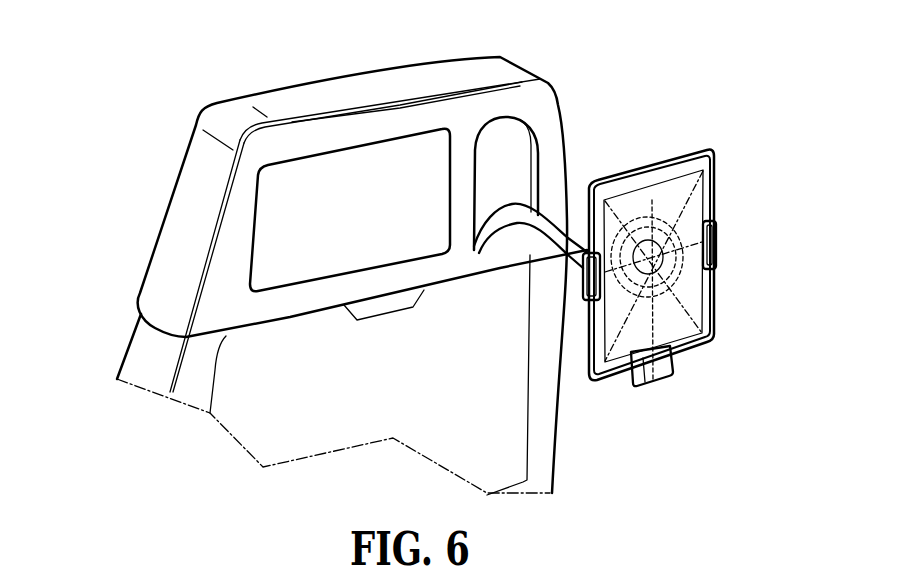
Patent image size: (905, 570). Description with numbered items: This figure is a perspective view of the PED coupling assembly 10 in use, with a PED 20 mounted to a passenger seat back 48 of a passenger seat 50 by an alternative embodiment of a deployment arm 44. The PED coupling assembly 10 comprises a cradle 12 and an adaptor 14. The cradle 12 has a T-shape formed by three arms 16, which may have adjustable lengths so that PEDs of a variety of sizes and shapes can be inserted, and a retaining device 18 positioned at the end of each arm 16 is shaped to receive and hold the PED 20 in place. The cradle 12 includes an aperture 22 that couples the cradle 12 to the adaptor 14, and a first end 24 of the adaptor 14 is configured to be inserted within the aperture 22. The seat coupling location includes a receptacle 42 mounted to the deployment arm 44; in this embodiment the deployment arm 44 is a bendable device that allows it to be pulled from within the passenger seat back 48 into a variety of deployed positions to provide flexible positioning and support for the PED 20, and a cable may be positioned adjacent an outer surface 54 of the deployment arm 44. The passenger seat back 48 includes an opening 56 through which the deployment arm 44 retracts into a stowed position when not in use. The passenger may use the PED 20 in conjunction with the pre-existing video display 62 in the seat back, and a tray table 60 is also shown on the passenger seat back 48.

The PED coupling assembly 10 is at (752, 140).
The cradle 12 is at (667, 378).
The adaptor 14 is at (652, 200).
The arm 16 is at (718, 192).
The retaining device 18 is at (718, 244).
The PED 20 is at (709, 148).
The aperture 22 is at (695, 280).
The first end 24 is at (680, 262).
The receptacle 42 is at (605, 198).
The deployment arm 44 is at (540, 213).
The passenger seat back 48 is at (293, 137).
The passenger seat 50 is at (140, 348).
The outer surface 54 is at (522, 252).
The opening 56 is at (492, 183).
The tray table 60 is at (263, 407).
The video display 62 is at (345, 173).